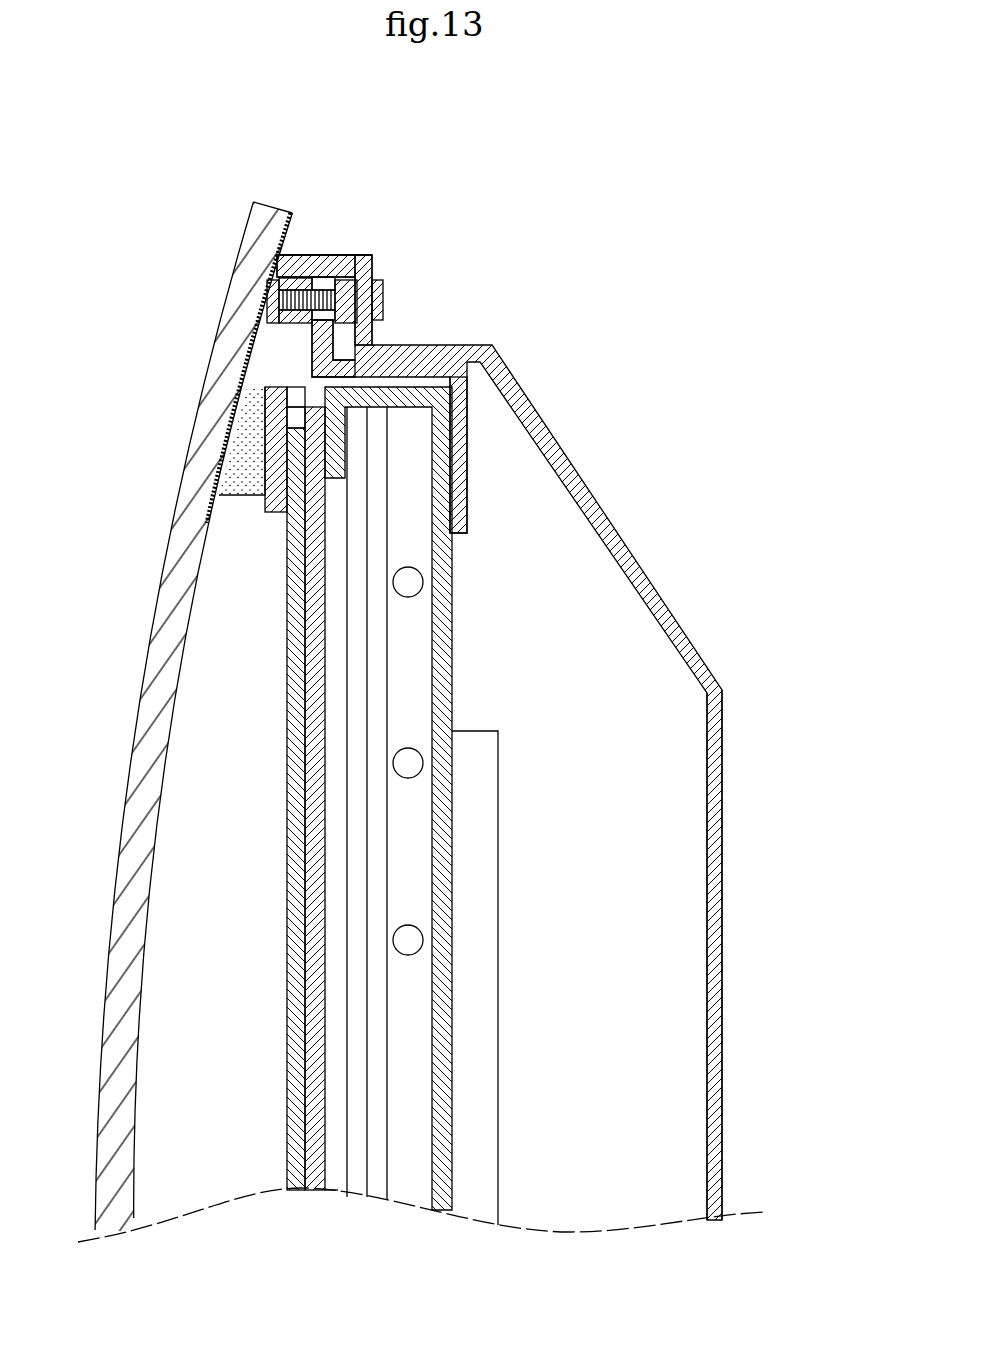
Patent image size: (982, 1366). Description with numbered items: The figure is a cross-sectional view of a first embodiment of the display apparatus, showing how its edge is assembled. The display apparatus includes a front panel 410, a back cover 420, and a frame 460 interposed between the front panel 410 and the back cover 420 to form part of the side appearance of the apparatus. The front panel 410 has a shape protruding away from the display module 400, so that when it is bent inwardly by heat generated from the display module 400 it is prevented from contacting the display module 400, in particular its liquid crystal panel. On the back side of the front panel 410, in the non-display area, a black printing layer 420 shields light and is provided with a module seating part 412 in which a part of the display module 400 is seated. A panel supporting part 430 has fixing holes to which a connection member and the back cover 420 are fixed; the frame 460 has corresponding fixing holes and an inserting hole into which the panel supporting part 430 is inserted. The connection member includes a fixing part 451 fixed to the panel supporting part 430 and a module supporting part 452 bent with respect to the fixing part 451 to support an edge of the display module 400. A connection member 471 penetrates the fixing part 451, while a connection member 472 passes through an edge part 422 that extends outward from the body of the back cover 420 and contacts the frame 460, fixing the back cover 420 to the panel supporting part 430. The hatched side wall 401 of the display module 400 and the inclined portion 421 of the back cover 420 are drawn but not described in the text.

The display module 400 is at (478, 651).
The frame side wall 401 is at (290, 836).
The front panel 410 is at (180, 577).
The module seating part 412 is at (253, 438).
The back cover 420 is at (240, 372).
The inclined portion of cover 421 is at (600, 522).
The edge part 422 is at (367, 268).
The panel supporting part 430 is at (257, 320).
The fixing part 451 is at (341, 340).
The module supporting part 452 is at (458, 438).
The frame 460 is at (313, 243).
The connection member 471 is at (318, 275).
The connection member 472 is at (385, 298).